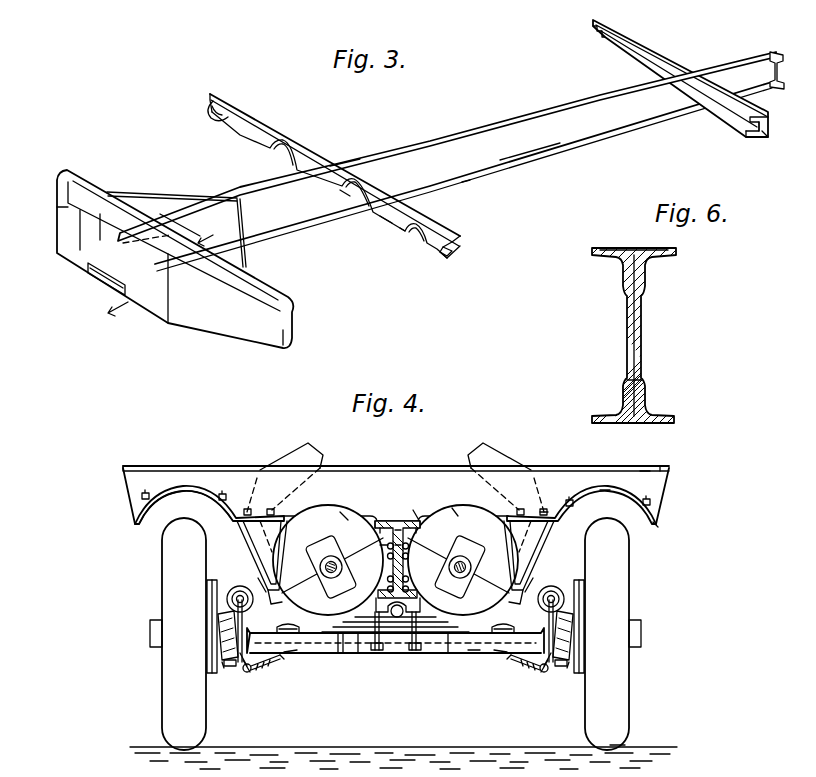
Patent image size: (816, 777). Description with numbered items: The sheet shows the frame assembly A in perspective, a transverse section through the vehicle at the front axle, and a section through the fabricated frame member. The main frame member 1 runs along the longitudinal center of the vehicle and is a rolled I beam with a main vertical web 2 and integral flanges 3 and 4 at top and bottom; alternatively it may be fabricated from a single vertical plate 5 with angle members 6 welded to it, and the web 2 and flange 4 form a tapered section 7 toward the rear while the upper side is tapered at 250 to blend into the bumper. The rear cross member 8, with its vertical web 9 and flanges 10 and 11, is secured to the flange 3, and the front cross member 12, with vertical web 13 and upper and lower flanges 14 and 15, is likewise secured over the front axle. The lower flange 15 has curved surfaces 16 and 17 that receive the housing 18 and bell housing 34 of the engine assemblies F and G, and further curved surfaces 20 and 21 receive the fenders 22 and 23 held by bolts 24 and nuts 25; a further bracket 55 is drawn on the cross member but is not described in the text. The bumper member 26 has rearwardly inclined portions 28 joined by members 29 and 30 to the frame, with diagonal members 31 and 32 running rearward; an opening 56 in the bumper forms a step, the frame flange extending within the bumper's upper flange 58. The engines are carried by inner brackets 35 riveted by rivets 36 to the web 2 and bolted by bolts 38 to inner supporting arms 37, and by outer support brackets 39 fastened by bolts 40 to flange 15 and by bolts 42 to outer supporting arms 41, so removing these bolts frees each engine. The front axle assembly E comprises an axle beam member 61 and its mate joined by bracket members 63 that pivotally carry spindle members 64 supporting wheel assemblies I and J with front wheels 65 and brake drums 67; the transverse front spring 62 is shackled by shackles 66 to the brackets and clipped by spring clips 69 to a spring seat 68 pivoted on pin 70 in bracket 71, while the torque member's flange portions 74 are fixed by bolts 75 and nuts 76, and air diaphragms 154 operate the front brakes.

In FIG. 3, the main frame member 1 is at (390, 150).
In FIG. 4, the main frame member 1 is at (400, 525).
In FIG. 3, the main vertical web 2 is at (468, 181).
In FIG. 4, the main vertical web 2 is at (405, 575).
In FIG. 3, the flange 3 is at (521, 117).
In FIG. 4, the flange 3 is at (398, 540).
In FIG. 3, the flange 4 is at (535, 160).
In FIG. 4, the flange 4 is at (440, 640).
In FIG. 6, the vertical plate 5 is at (642, 330).
In FIG. 6, the angle members 6 is at (598, 258).
In FIG. 3, the tapered section 7 is at (772, 86).
In FIG. 3, the rear cross member 8 is at (766, 122).
In FIG. 6, the rear cross member 8 is at (645, 390).
In FIG. 3, the vertical web 9 is at (769, 134).
In FIG. 3, the flange 10 is at (745, 120).
In FIG. 3, the flange 11 is at (750, 134).
In FIG. 3, the front cross member 12 is at (450, 240).
In FIG. 4, the front cross member 12 is at (123, 468).
In FIG. 3, the vertical web 13 is at (448, 248).
In FIG. 4, the vertical web 13 is at (668, 493).
In FIG. 3, the upper flange 14 is at (443, 254).
In FIG. 4, the upper flange 14 is at (645, 472).
In FIG. 3, the lower flange 15 is at (386, 224).
In FIG. 4, the lower flange 15 is at (543, 512).
In FIG. 3, the curved surface 16 is at (285, 144).
In FIG. 4, the curved surface 16 is at (345, 520).
In FIG. 3, the curved surface 17 is at (356, 182).
In FIG. 4, the curved surface 17 is at (455, 505).
In FIG. 4, the housing 18 is at (300, 578).
In FIG. 3, the curved surface 20 is at (418, 240).
In FIG. 4, the curved surface 20 is at (605, 492).
In FIG. 3, the curved surface 21 is at (222, 114).
In FIG. 4, the curved surface 21 is at (180, 486).
In FIG. 4, the fender 22 is at (658, 525).
In FIG. 4, the fender 23 is at (134, 525).
In FIG. 4, the bolts 24 is at (210, 510).
In FIG. 4, the nuts 25 is at (146, 494).
In FIG. 3, the bumper member 26 is at (293, 322).
In FIG. 3, the rearwardly inclined portions 28 is at (57, 192).
In FIG. 3, the member 29 is at (262, 282).
In FIG. 3, the member 30 is at (92, 182).
In FIG. 3, the member 31 is at (247, 258).
In FIG. 3, the member 32 is at (180, 194).
In FIG. 4, the bell housing 34 is at (360, 517).
In FIG. 4, the inner brackets 35 is at (383, 548).
In FIG. 4, the rivets 36 is at (388, 565).
In FIG. 4, the inner supporting arms 37 is at (383, 525).
In FIG. 4, the bolts 38 is at (376, 522).
In FIG. 4, the outer support brackets 39 is at (206, 541).
In FIG. 4, the bolts 40 is at (249, 509).
In FIG. 4, the outer supporting arms 41 is at (276, 603).
In FIG. 4, the bolts 42 is at (262, 590).
In FIG. 4, the support bracket 55 is at (300, 447).
In FIG. 3, the opening 56 is at (92, 276).
In FIG. 3, the upper flange 58 is at (72, 217).
In FIG. 4, the axle beam member 61 is at (370, 652).
In FIG. 4, the front spring 62 is at (378, 650).
In FIG. 4, the bracket members 63 is at (246, 670).
In FIG. 4, the spindle members 64 is at (222, 662).
In FIG. 4, the front wheels 65 is at (165, 700).
In FIG. 4, the shackles 66 is at (241, 672).
In FIG. 4, the brake drums 67 is at (225, 666).
In FIG. 4, the spring seat 68 is at (352, 634).
In FIG. 4, the spring clips 69 is at (416, 654).
In FIG. 4, the pin 70 is at (340, 640).
In FIG. 4, the bracket 71 is at (380, 603).
In FIG. 4, the flange portions 74 is at (268, 664).
In FIG. 4, the bolts 75 is at (280, 660).
In FIG. 4, the nuts 76 is at (288, 651).
In FIG. 4, the air diaphragms 154 is at (207, 573).
In FIG. 3, the tapered portion 250 is at (187, 210).
In FIG. 3, the frame assembly A is at (580, 147).
In FIG. 4, the frame assembly A is at (672, 471).
In FIG. 4, the front axle assembly E is at (462, 640).
In FIG. 4, the engine assembly F is at (300, 634).
In FIG. 4, the engine assembly G is at (475, 656).
In FIG. 4, the wheel assembly I is at (630, 722).
In FIG. 4, the wheel assembly J is at (162, 720).